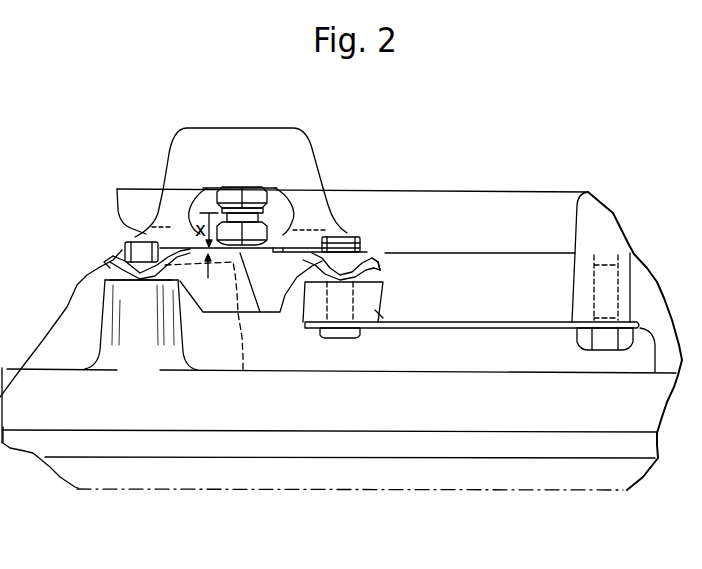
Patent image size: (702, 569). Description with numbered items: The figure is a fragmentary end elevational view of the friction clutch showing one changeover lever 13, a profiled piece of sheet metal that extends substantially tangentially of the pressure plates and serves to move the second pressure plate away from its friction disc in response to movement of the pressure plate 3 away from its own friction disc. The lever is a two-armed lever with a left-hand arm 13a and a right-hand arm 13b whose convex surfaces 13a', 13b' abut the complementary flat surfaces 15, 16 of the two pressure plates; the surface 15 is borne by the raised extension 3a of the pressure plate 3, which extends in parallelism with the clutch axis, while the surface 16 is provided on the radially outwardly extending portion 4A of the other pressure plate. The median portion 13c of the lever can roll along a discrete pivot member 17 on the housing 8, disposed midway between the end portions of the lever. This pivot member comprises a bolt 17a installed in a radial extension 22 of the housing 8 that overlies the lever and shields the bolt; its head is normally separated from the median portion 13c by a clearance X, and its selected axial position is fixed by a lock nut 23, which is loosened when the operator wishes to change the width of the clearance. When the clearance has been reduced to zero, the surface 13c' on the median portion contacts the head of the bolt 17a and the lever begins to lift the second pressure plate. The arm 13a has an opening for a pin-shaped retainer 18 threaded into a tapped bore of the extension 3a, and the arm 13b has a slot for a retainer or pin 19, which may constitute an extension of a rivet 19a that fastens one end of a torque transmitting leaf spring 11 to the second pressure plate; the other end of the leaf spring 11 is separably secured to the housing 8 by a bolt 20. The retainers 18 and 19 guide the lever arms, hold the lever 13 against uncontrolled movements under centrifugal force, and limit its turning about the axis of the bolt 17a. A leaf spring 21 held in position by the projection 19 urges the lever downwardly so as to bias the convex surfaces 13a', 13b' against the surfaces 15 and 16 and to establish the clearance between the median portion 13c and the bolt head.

The pressure plate 3 is at (134, 412).
The extension of the pressure plate 3a is at (110, 340).
The radially outwardly extending portion of the pressure plate 4A is at (313, 307).
The housing 8 is at (448, 202).
The torque transmitting leaf spring 11 is at (470, 330).
The changeover lever 13 is at (224, 296).
The left-hand end portion or arm of the changeover lever 13a is at (110, 229).
The convex surface of arm 13a 13a' is at (75, 252).
The right-hand end portion or arm of the changeover lever 13b is at (396, 250).
The convex surface of arm 13b 13b' is at (412, 275).
The median portion of the changeover lever 13c is at (214, 337).
The surface on the median portion 13c' is at (265, 303).
The flat surface of the pressure plate 15 is at (143, 282).
The flat surface of the pressure plate 16 is at (377, 316).
The pivot member 17 is at (273, 218).
The screw or bolt 17a is at (246, 226).
The retainer 18 is at (135, 250).
The retainer or pin 19 is at (343, 242).
The rivet 19a is at (343, 338).
The bolt 20 is at (602, 352).
The leaf spring 21 is at (376, 252).
The radial extension of the housing 22 is at (199, 137).
The lock nut 23 is at (231, 196).